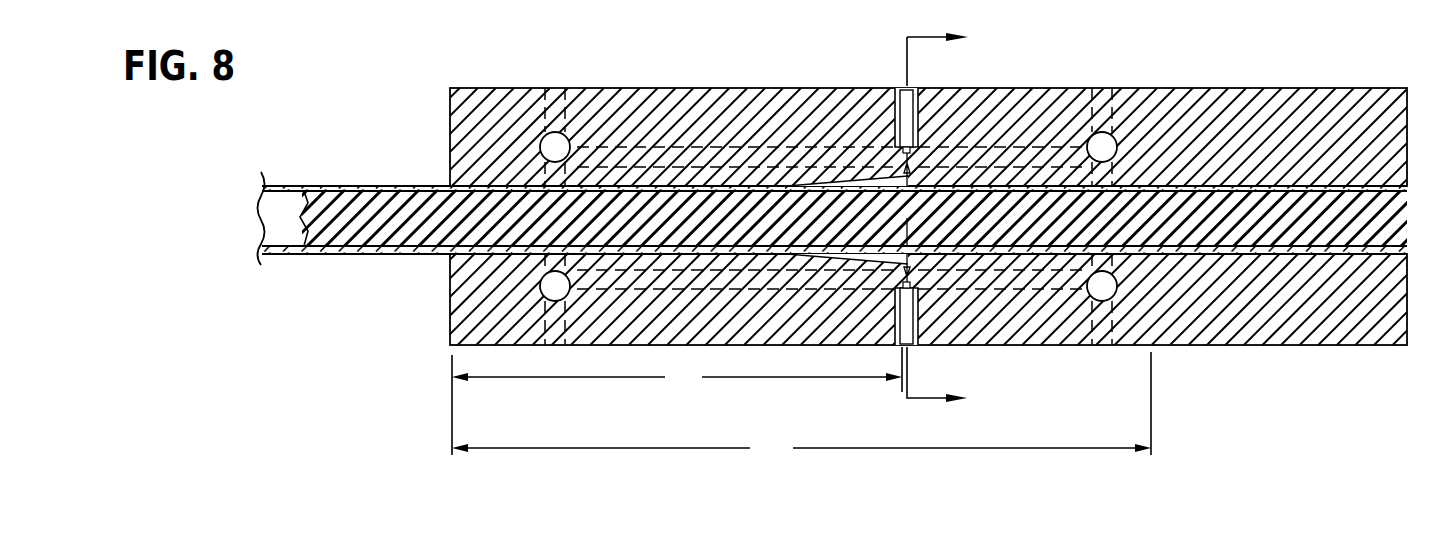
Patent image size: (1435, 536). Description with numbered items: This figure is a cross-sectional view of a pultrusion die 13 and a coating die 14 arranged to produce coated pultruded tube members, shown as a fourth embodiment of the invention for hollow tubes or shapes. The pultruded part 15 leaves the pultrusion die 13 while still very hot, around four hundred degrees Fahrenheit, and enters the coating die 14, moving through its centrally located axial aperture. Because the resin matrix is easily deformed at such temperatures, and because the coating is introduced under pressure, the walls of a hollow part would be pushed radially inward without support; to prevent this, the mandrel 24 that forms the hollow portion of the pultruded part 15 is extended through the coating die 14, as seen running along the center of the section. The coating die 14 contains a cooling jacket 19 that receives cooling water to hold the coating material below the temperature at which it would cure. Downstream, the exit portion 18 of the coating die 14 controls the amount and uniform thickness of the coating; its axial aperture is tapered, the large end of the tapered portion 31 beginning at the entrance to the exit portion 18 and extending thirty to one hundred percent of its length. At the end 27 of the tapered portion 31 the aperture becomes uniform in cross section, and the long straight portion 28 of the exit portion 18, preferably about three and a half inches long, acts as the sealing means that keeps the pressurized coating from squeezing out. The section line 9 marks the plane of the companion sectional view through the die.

The section line 9- 9 is at (951, 219).
The pultrusion die 13 is at (1238, 345).
The coating die 14 is at (801, 408).
The pultruded part 15 is at (1307, 186).
The exit portion 18 is at (677, 401).
The cooling jacket 19 is at (613, 147).
The mandrel 24 is at (388, 233).
The end of the tapered portion 27 is at (760, 186).
The long straight portion 28 is at (483, 186).
The tapered portion 31 is at (847, 178).